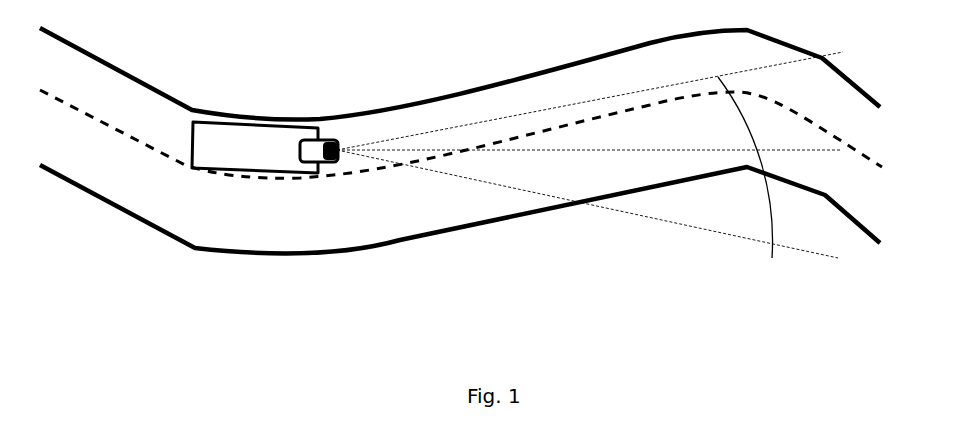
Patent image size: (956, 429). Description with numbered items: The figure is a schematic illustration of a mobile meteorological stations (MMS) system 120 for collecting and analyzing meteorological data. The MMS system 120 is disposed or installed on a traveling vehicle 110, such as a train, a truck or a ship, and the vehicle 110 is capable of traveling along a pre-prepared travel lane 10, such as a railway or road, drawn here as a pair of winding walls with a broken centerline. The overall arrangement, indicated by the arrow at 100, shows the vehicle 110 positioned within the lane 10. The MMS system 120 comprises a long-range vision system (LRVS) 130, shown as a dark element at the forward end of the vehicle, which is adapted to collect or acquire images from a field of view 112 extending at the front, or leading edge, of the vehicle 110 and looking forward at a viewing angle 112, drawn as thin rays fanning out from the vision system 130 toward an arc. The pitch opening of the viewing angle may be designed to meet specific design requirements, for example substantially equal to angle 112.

The travel lane 10 is at (130, 213).
The inspection device 100 is at (280, 213).
The traveling vehicle 110 is at (235, 135).
The field of view 112 is at (757, 168).
The mobile meteorological stations (MMS) system 120 is at (313, 147).
The long-range vision system 130 is at (329, 141).